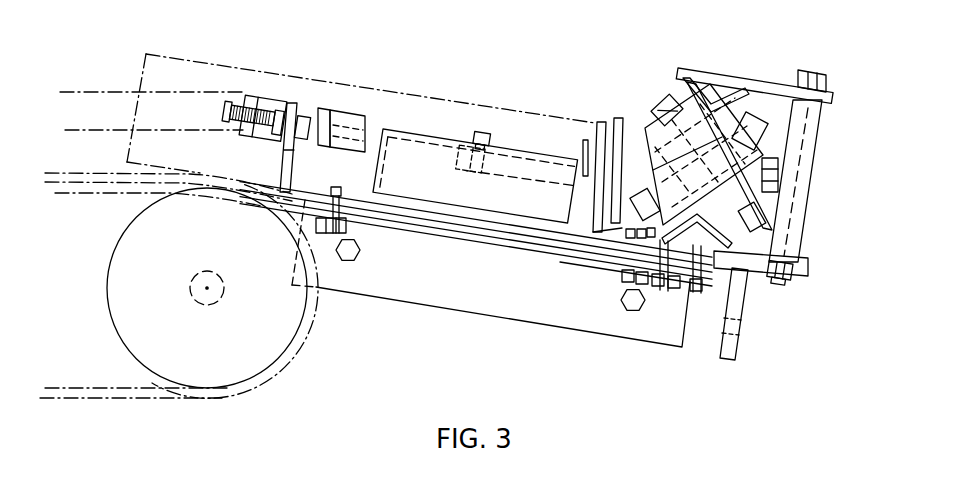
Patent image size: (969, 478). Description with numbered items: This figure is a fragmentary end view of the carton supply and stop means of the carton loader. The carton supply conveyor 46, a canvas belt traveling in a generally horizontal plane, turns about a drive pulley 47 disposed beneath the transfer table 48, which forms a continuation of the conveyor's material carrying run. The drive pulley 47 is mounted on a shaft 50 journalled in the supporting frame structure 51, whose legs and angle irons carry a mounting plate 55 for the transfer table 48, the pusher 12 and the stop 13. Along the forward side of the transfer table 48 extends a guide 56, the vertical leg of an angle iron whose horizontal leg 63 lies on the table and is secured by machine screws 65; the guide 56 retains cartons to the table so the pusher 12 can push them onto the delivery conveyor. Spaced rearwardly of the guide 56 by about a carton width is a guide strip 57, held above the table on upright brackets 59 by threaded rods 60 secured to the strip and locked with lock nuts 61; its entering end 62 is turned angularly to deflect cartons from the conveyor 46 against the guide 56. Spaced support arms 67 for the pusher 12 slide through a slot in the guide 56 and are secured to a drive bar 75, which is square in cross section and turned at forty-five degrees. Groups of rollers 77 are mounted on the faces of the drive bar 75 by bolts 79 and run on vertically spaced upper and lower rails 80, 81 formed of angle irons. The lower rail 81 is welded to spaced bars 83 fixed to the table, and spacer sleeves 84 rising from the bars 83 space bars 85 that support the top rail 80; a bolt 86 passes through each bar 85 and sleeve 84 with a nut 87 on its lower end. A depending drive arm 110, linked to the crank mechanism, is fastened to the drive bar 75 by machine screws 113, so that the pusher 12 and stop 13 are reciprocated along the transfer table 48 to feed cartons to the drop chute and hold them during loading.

The pusher 12 is at (440, 129).
The stop 13 is at (598, 124).
The carton supply conveyor 46 is at (300, 352).
The drive pulley 47 is at (107, 290).
The transfer table 48 is at (320, 190).
The shaft 50 is at (226, 288).
The supporting frame structure 51 is at (574, 338).
The mounting plate 55 is at (510, 238).
The guide 56 is at (594, 150).
The guide strip 57 is at (319, 143).
The upright brackets 59 is at (283, 162).
The threaded rods 60 is at (233, 115).
The lock nuts 61 is at (294, 103).
The turned entering end of the guide strip 62 is at (342, 112).
The horizontal leg 63 is at (614, 250).
The machine screws 65 is at (584, 214).
The support arms 67 is at (580, 150).
The drive bar 75 is at (683, 80).
The rollers 77 is at (652, 116).
The bolts 79 is at (772, 108).
The top rail 80 is at (725, 72).
The lower rail 81 is at (703, 272).
The spaced bars 83 is at (749, 272).
The spacer sleeves 84 is at (806, 192).
The bars 85 is at (702, 66).
The bolt 86 is at (818, 71).
The nut 87 is at (810, 285).
The drive arm 110 is at (748, 320).
The machine screws 113 is at (780, 176).